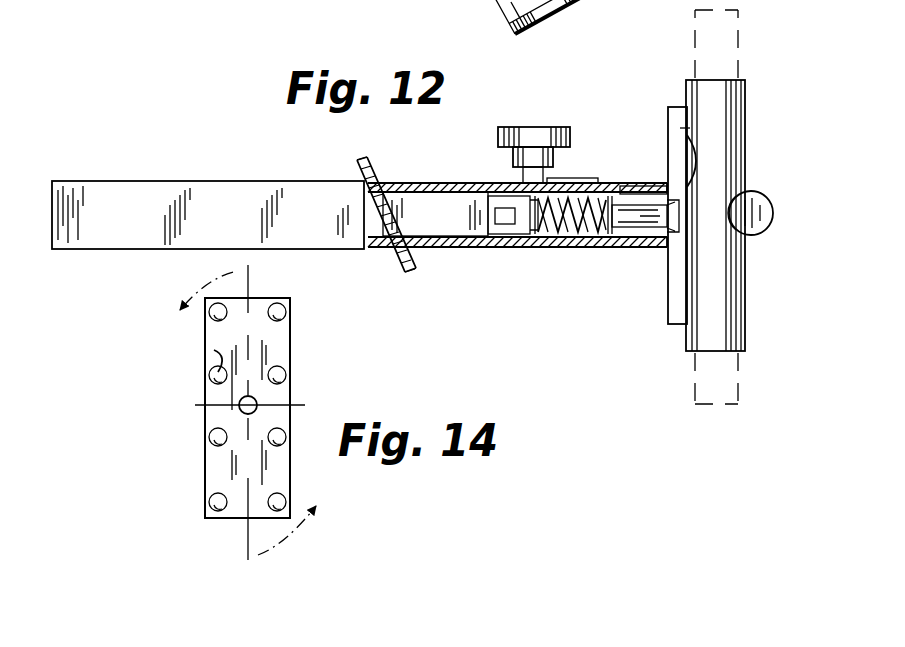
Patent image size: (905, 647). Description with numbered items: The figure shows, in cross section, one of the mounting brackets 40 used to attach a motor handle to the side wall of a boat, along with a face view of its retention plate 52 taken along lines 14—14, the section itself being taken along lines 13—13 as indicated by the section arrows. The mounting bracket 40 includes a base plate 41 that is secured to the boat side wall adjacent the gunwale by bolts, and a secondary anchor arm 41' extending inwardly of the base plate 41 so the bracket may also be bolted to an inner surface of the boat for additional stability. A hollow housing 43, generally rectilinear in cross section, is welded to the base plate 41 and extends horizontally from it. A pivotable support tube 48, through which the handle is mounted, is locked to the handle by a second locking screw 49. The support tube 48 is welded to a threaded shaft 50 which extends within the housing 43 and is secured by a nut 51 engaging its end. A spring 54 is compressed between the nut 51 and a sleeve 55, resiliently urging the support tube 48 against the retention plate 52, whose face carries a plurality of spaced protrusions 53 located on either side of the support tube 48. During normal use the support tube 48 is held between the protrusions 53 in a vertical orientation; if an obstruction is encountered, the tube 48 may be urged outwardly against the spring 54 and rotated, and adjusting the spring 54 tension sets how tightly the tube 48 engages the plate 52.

In FIG. 12, the rod / direction arrow 13 is at (627, 222).
In FIG. 12, the direction arrow 14 is at (702, 90).
In FIG. 12, the mounting bracket 40 is at (440, 252).
In FIG. 12, the base plate 41 is at (374, 187).
In FIG. 12, the secondary anchor arm 41' is at (208, 187).
In FIG. 12, the hollow housing 43 is at (478, 246).
In FIG. 12, the pivotable support tube 48 is at (745, 130).
In FIG. 12, the second locking screw 49 is at (765, 197).
In FIG. 12, the threaded shaft 50 is at (552, 232).
In FIG. 14, the threaded shaft 50 is at (258, 405).
In FIG. 12, the nut 51 is at (518, 182).
In FIG. 12, the retention plate 52 is at (668, 306).
In FIG. 14, the retention plate 52 is at (215, 460).
In FIG. 12, the protrusion 53 is at (691, 128).
In FIG. 14, the protrusion 53 is at (278, 313).
In FIG. 12, the spring 54 is at (590, 236).
In FIG. 12, the sleeve 55 is at (634, 166).